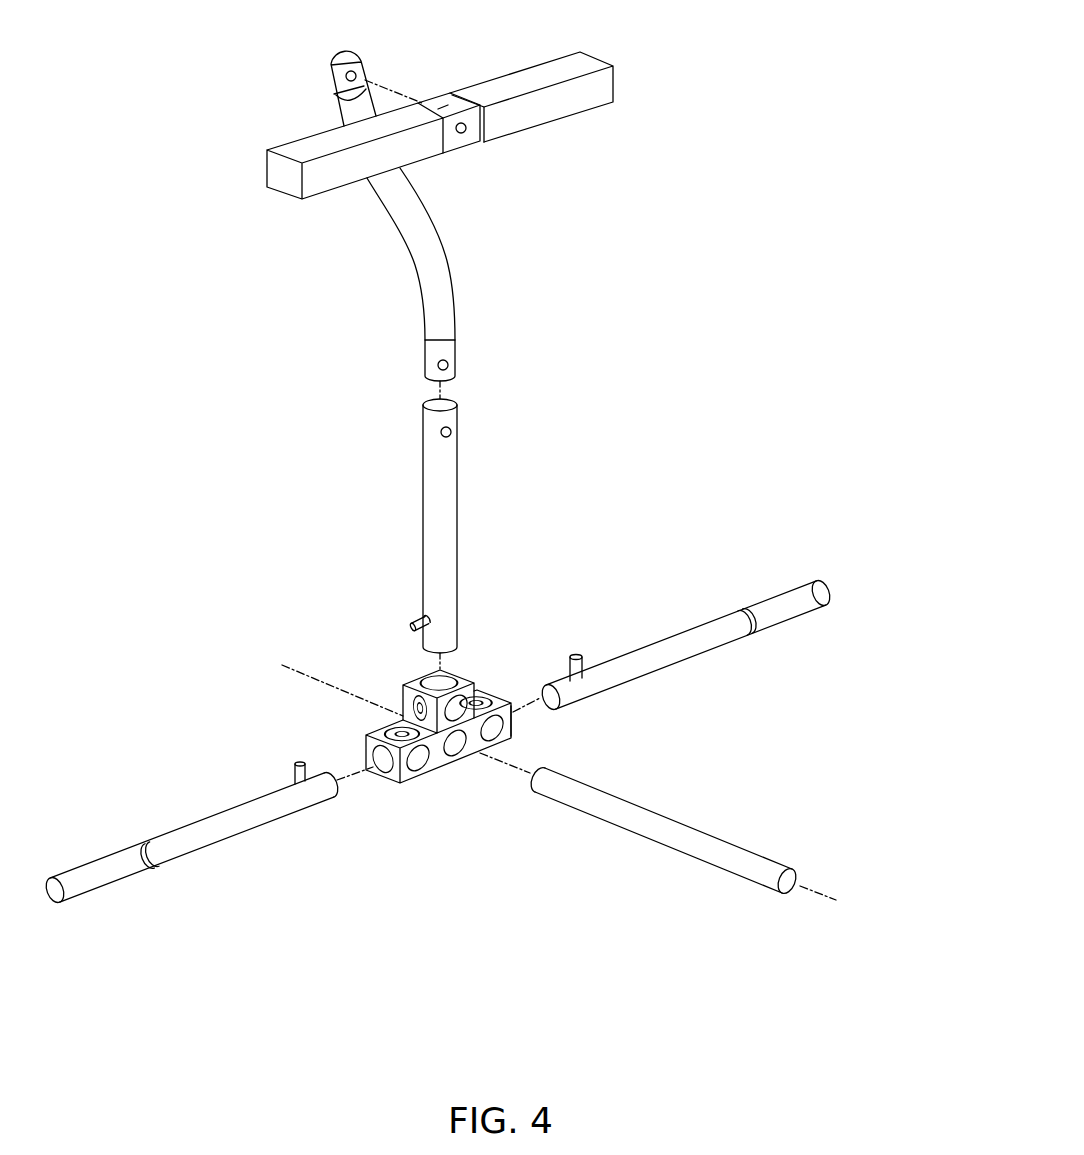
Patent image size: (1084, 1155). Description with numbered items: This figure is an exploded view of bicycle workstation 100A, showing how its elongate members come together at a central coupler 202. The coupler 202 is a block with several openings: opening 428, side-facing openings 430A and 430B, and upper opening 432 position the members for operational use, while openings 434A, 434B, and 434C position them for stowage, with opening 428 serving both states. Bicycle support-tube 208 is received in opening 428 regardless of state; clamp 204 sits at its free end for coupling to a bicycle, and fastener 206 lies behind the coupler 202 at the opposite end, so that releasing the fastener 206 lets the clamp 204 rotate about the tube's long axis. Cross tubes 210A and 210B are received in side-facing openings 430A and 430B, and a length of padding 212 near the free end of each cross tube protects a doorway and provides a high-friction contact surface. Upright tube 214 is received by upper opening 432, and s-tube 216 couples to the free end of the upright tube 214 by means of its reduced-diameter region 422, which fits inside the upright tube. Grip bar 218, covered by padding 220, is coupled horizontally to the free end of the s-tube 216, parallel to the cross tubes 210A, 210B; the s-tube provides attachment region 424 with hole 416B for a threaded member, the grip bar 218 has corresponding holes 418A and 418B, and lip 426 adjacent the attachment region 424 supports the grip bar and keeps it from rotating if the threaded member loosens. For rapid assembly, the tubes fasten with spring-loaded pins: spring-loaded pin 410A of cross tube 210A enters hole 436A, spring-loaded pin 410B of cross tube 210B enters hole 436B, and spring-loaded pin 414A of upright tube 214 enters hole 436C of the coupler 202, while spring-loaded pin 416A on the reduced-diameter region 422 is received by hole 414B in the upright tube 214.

The bicycle workstation 100A is at (630, 347).
The coupler 202 is at (454, 723).
The clamp 204 is at (879, 920).
The fastener 206 is at (290, 670).
The bicycle support-tube 208 is at (737, 855).
The cross tube 210A is at (195, 816).
The cross tube 210B is at (682, 638).
The padding 212 is at (108, 876).
The upright tube 214 is at (448, 526).
The s-tube 216 is at (391, 194).
The grip bar 218 is at (443, 122).
The padding 220 is at (578, 100).
The spring-loaded pin 410A is at (296, 776).
The spring-loaded pin 410B is at (581, 664).
The spring-loaded pin 414A is at (416, 618).
The hole 414B is at (451, 433).
The spring-loaded pin 416A is at (425, 366).
The hole 416B is at (356, 72).
The hole 418A is at (466, 134).
The hole 418B is at (433, 100).
The reduced-diameter region 422 is at (440, 342).
The attachment region 424 is at (333, 67).
The lip 426 is at (350, 100).
The opening 428 is at (454, 730).
The side-facing opening 430A is at (383, 783).
The side-facing opening 430B is at (514, 728).
The upper opening 432 is at (428, 672).
The opening 434A is at (422, 782).
The opening 434B is at (508, 742).
The opening 434C is at (446, 782).
The hole 436A is at (392, 728).
The hole 436B is at (490, 693).
The hole 436C is at (404, 698).